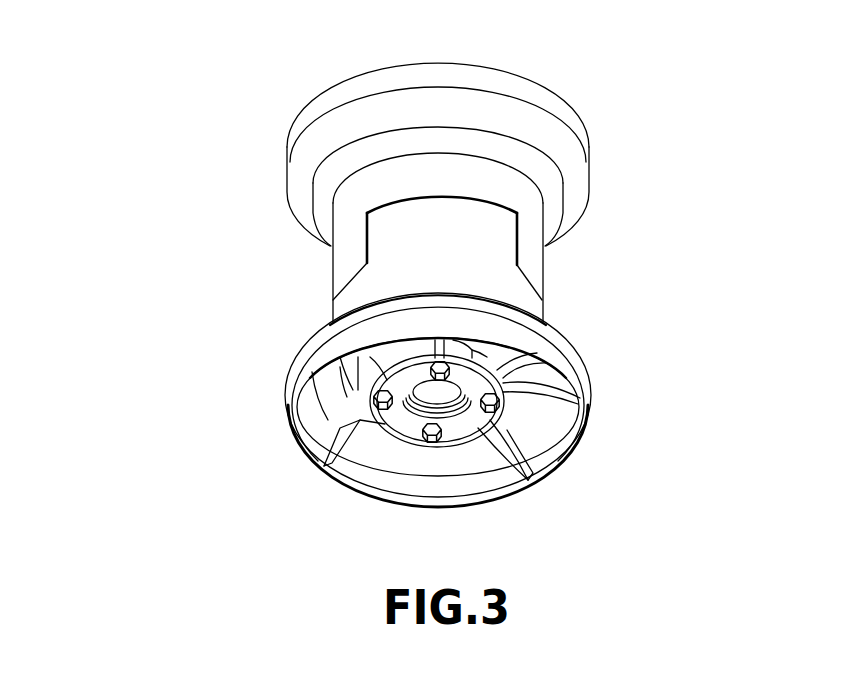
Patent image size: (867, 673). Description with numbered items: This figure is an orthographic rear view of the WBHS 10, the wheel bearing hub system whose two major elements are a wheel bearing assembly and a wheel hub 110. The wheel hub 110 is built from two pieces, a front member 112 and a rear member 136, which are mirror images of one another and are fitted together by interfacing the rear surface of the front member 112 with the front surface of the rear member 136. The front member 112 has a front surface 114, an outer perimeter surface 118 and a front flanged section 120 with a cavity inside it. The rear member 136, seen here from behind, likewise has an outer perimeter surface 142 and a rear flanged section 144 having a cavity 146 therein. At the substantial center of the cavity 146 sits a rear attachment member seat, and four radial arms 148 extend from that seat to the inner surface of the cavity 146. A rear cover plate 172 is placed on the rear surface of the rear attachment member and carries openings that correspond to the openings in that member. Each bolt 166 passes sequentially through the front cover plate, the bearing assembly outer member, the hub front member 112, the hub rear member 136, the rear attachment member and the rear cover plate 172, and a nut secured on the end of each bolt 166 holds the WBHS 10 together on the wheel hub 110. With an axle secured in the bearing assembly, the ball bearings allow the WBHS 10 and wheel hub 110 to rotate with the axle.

The WBHS 10 is at (118, 104).
The front member 112 is at (523, 77).
The front surface 114 is at (438, 124).
The front flanged section 120 is at (553, 137).
The wheel hub 110 is at (662, 210).
The outer perimeter surface 118 is at (530, 230).
The rear member 136 is at (375, 282).
The outer perimeter surface 142 is at (442, 205).
The rear flanged section 144 is at (318, 357).
The cavity 146 is at (368, 453).
The radial arms 148 is at (340, 432).
The bolt 166 is at (535, 443).
The rear cover plate 172 is at (460, 428).